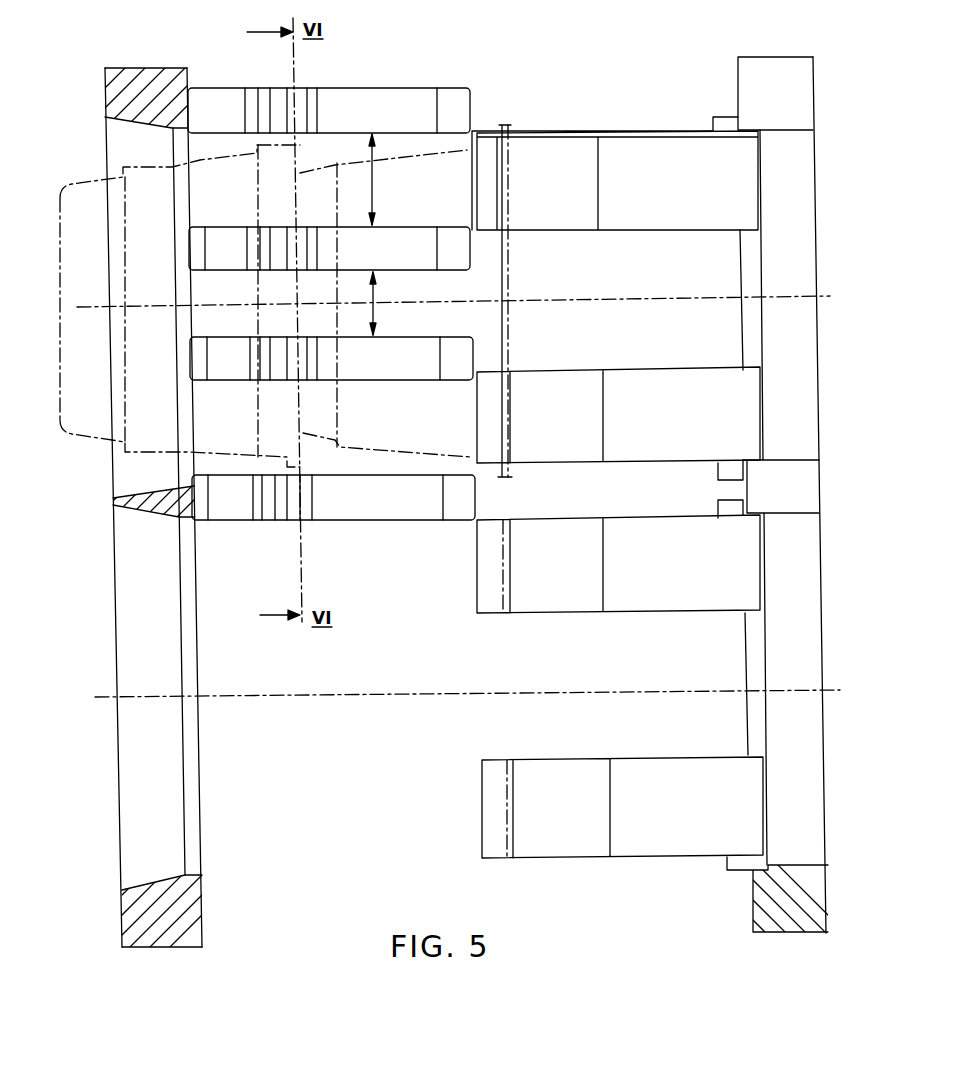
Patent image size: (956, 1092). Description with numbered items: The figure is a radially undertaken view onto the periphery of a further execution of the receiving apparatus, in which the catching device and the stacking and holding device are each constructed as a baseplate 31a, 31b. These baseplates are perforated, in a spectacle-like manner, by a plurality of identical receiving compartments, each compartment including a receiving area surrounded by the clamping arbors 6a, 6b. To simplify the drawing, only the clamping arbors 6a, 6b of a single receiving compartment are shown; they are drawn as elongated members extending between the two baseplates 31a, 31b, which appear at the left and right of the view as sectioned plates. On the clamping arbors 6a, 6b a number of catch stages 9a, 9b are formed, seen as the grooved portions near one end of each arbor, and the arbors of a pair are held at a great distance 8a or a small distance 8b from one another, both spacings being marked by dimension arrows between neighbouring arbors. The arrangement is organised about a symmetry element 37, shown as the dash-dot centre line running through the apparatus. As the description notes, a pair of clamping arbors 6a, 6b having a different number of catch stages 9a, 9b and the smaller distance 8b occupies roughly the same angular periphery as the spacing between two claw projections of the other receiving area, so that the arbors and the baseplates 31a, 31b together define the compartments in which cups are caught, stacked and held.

The clamping arbor 6a is at (329, 89).
The clamping arbor 6b is at (329, 244).
The great distance 8a is at (375, 181).
The small distance 8b is at (378, 290).
The catch stage 9a is at (318, 97).
The catch stage 9b is at (312, 258).
The symmetry element 37 is at (633, 297).
The baseplate 31a is at (115, 647).
The baseplate 31b is at (824, 656).